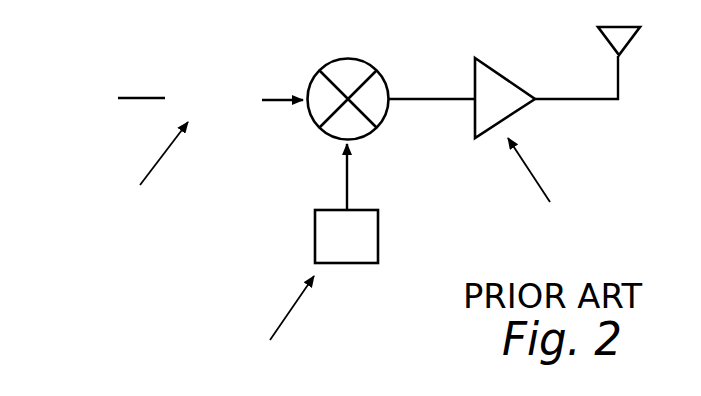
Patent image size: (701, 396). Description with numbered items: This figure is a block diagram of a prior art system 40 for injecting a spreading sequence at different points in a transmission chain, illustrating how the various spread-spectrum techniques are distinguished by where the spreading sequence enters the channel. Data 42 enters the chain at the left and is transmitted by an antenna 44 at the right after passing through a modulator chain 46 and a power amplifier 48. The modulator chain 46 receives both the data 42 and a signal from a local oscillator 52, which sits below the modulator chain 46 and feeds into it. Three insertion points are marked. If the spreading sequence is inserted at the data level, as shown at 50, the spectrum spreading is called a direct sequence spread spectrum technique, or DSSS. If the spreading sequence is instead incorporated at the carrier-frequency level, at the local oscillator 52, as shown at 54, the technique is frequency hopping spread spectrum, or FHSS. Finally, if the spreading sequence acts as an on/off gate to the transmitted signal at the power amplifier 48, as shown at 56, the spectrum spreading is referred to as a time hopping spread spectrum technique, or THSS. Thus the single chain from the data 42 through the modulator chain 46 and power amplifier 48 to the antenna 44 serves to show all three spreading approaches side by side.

The prior art spread spectrum transmitter system 40 is at (95, 48).
The data 42 is at (204, 90).
The antenna 44 is at (628, 40).
The modulator chain 46 is at (367, 61).
The power amplifier 48 is at (475, 122).
The spreading sequence insertion at the data level 50 is at (113, 189).
The local oscillator 52 is at (378, 235).
The spreading sequence insertion at the carrier-frequency level 54 is at (246, 342).
The spreading sequence gating at the power amplifier 56 is at (586, 200).